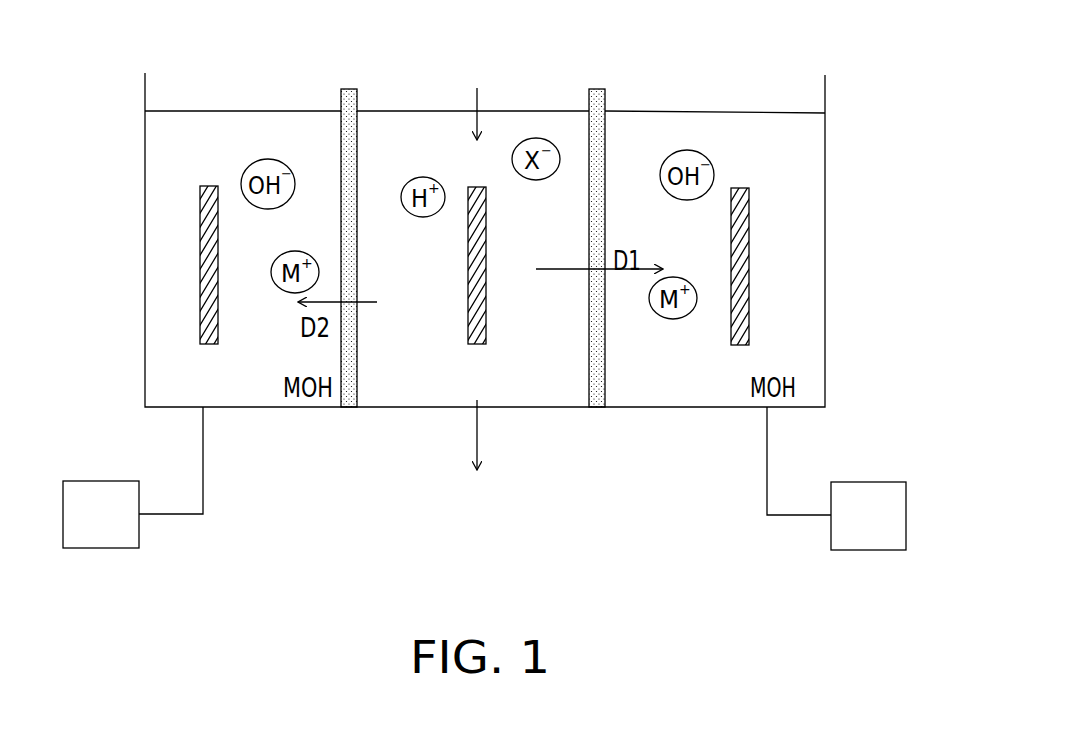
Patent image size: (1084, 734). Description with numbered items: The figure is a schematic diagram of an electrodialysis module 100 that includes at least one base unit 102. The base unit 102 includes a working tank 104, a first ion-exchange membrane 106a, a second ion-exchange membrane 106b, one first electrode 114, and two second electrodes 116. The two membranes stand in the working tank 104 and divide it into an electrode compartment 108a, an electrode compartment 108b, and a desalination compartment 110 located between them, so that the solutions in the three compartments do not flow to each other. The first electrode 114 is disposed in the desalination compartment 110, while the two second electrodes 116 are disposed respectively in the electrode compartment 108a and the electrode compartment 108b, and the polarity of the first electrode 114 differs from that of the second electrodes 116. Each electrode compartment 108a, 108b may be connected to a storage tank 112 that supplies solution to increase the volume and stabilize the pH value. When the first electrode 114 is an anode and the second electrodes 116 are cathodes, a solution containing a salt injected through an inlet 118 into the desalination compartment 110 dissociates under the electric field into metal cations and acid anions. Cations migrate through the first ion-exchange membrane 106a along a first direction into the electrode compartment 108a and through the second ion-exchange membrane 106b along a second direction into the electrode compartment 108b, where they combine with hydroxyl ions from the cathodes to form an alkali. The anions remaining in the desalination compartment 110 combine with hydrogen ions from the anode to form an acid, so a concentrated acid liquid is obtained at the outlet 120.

The electrodialysis module 100 is at (863, 87).
The base unit 102 is at (887, 616).
The working tank 104 is at (826, 285).
The first ion-exchange membrane 106a is at (597, 88).
The second ion-exchange membrane 106b is at (349, 88).
The electrode compartment 108a is at (664, 388).
The electrode compartment 108b is at (270, 394).
The desalination compartment 110 is at (400, 393).
The storage tank 112 is at (484, 478).
The first electrode 114 is at (482, 329).
The second electrode 116 is at (213, 294).
The inlet 118 is at (478, 102).
The outlet 120 is at (479, 430).